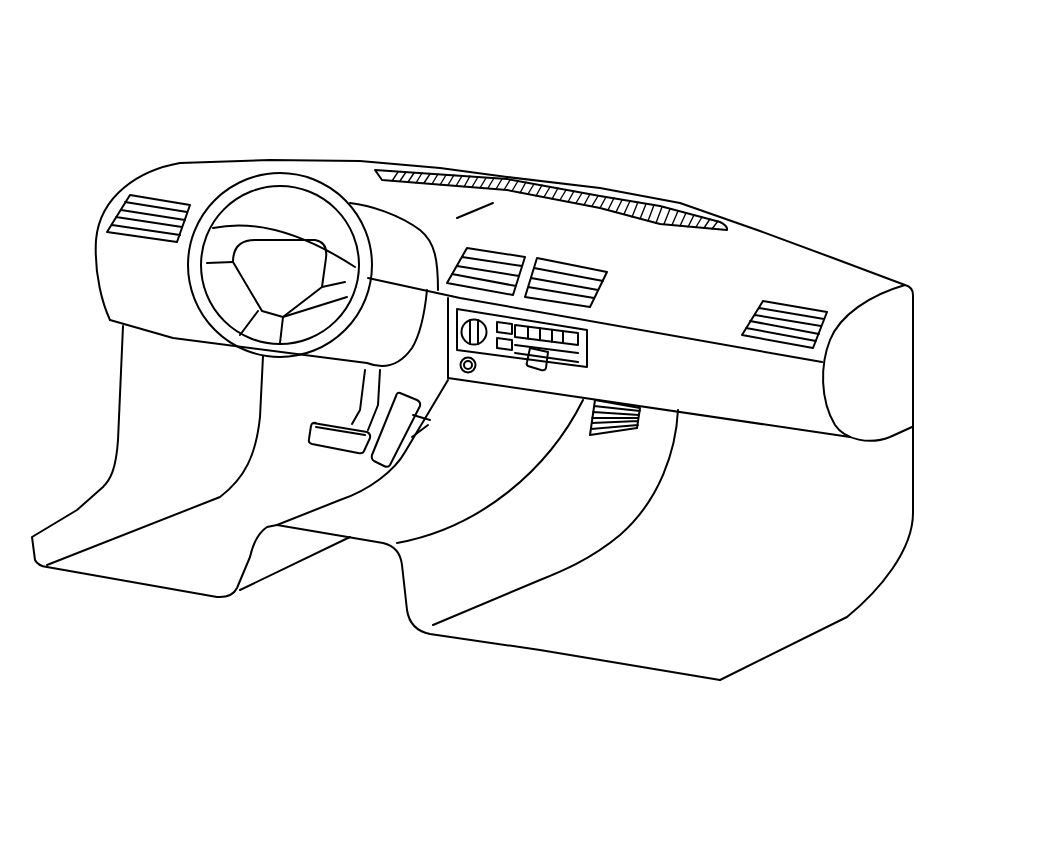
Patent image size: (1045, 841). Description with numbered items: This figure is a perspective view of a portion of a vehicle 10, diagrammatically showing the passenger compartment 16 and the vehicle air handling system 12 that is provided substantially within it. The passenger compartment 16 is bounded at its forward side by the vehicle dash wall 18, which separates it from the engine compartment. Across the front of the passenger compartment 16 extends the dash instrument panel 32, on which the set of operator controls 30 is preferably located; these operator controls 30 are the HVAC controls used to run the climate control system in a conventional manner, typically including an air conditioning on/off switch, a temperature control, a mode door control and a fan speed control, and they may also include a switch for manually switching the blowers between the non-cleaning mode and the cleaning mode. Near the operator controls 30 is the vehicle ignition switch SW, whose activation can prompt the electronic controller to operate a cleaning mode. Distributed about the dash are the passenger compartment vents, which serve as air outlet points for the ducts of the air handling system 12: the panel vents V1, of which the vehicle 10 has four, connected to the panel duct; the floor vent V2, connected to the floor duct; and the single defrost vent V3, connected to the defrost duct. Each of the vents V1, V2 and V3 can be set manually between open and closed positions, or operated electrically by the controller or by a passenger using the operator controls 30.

The vehicle 10 is at (647, 62).
The vehicle air handling system 12 is at (765, 168).
The passenger compartment 16 is at (662, 608).
The vehicle dash wall 18 is at (915, 328).
The operator controls 30 is at (588, 353).
The dash instrument panel 32 is at (762, 392).
The panel vent V1 is at (147, 238).
The floor vent V2 is at (617, 433).
The defrost vent V3 is at (527, 190).
The vehicle ignition switch SW is at (466, 375).